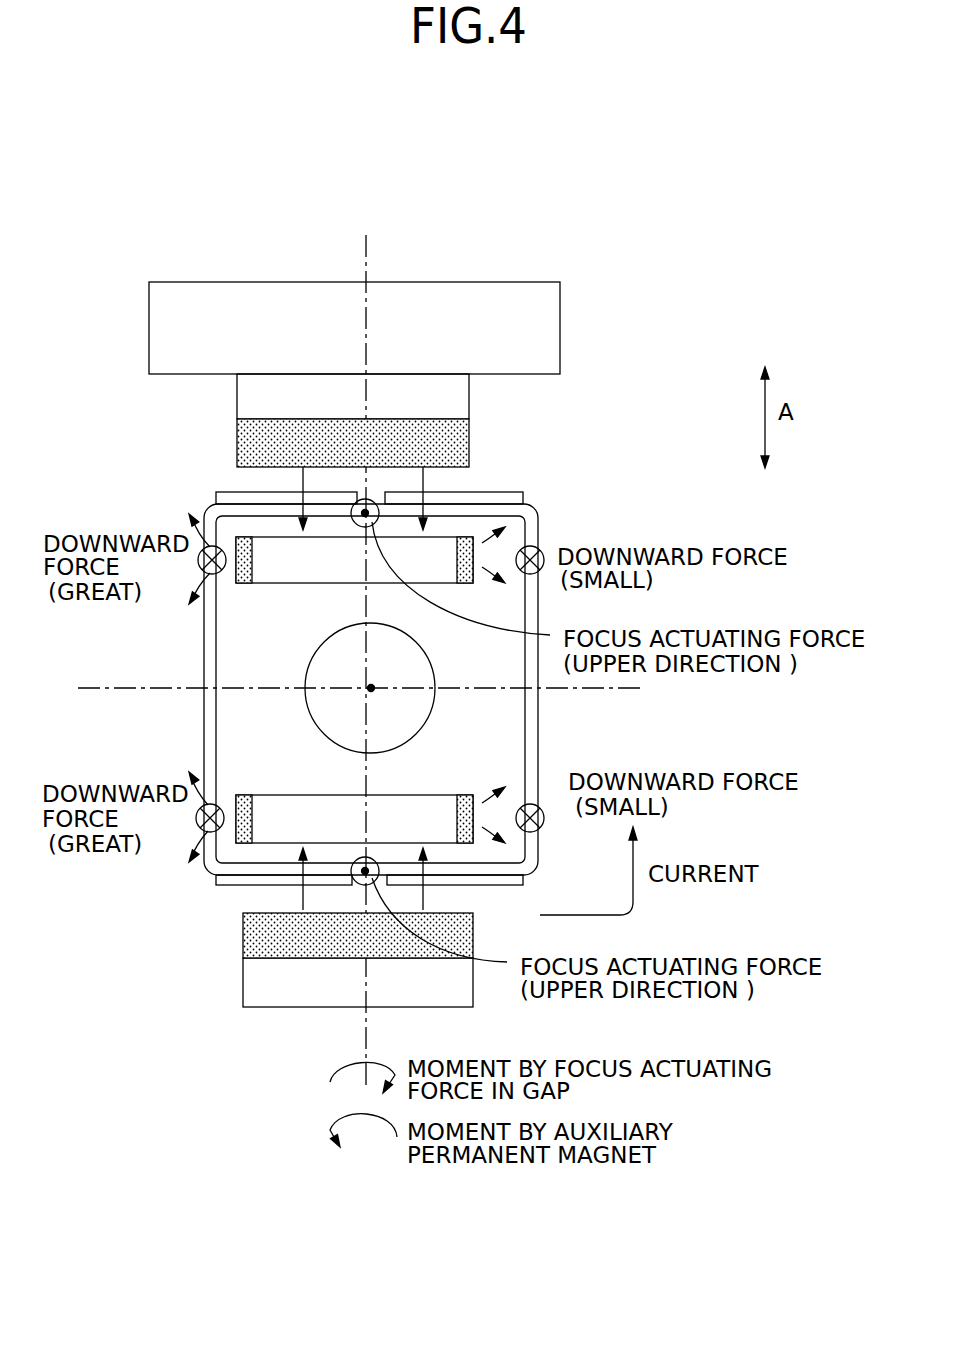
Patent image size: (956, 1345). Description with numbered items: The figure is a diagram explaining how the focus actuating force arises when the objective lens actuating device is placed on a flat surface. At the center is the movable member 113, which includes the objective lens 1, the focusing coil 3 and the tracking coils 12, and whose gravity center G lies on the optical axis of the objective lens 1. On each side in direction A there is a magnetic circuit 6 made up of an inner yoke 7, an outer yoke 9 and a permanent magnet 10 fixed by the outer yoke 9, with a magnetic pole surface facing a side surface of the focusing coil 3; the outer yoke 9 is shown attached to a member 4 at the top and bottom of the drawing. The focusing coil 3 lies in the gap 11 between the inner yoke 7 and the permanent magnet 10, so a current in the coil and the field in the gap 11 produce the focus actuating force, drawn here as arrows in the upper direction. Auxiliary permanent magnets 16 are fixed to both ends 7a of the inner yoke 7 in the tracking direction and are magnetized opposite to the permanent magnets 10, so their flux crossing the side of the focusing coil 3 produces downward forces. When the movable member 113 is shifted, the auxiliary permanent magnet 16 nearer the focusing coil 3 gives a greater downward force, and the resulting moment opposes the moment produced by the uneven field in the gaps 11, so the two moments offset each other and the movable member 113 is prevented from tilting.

The objective lens 1 is at (428, 702).
The focusing coil 3 is at (530, 740).
The fixed member 4 is at (510, 310).
The magnetic circuit 6 is at (190, 423).
The inner yoke 7 is at (342, 570).
The end of inner yoke 7a is at (252, 557).
The outer yoke 9 is at (470, 397).
The permanent magnet 10 is at (470, 433).
The gap 11 is at (470, 477).
The tracking coil 12 is at (233, 492).
The auxiliary permanent magnet 16 is at (243, 540).
The movable member 113 is at (170, 725).